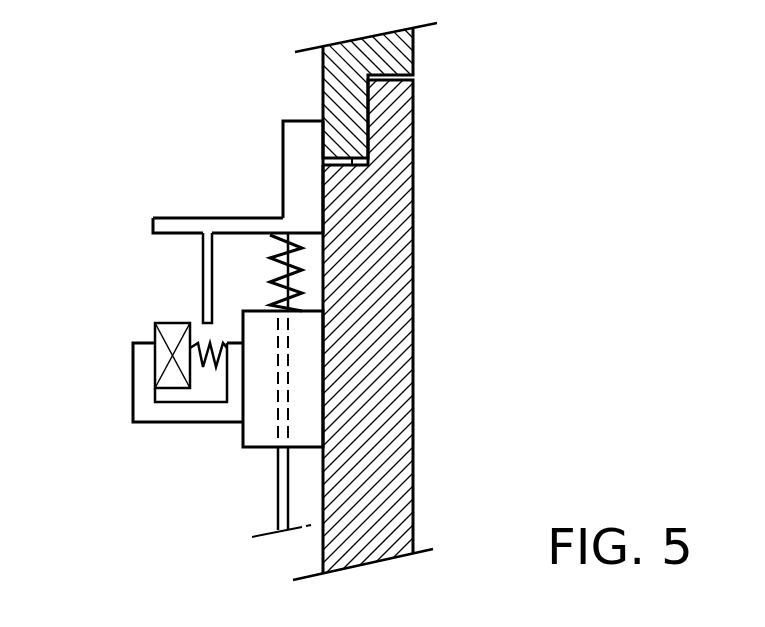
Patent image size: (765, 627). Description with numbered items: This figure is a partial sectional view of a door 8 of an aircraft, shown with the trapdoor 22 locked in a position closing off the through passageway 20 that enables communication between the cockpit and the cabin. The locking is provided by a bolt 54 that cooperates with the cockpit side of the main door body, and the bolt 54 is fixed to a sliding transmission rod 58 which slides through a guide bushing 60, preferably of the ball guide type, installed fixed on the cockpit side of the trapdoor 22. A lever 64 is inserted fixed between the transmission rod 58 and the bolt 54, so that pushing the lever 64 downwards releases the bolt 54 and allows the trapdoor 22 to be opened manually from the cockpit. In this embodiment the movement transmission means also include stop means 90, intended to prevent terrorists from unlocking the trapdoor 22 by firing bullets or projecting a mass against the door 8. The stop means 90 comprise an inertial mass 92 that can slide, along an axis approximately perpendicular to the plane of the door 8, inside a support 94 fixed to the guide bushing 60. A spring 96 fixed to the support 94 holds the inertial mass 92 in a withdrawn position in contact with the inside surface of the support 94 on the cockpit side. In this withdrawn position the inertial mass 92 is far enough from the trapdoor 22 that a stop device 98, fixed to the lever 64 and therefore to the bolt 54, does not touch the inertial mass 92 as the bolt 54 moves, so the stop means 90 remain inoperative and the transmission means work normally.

The door 8 is at (462, 90).
The through passageway 20 is at (352, 162).
The trapdoor 22 is at (405, 266).
The bolt 54 is at (293, 135).
The sliding transmission rod 58 is at (280, 507).
The guide bushing 60 is at (307, 418).
The lever 64 is at (165, 223).
The stop means 90 is at (118, 383).
The inertial mass 92 is at (173, 335).
The support 94 is at (145, 412).
The spring 96 is at (217, 367).
The stop device 98 is at (208, 277).